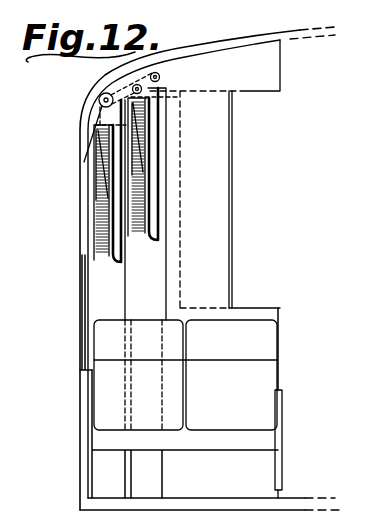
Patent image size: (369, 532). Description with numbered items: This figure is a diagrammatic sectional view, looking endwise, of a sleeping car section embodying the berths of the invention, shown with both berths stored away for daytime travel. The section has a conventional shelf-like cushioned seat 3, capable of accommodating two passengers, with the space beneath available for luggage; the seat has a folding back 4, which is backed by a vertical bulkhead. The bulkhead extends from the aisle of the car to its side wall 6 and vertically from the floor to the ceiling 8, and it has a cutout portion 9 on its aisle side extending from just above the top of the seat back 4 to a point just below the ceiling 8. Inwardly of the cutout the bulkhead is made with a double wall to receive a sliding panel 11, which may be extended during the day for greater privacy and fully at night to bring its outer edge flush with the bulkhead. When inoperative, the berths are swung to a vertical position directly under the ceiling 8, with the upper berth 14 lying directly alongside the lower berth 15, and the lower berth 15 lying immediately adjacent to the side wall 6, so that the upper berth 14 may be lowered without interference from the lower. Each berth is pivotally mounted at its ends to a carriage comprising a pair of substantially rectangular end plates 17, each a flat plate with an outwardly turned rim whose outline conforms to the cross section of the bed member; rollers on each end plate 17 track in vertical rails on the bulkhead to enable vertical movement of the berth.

The cushioned seat 3 is at (257, 429).
The folding back 4 is at (265, 351).
The side wall 6 is at (100, 295).
The ceiling 8 is at (257, 46).
The cutout portion 9 is at (249, 270).
The sliding panel 11 is at (234, 200).
The upper berth 14 is at (164, 211).
The lower berth 15 is at (111, 265).
The end plate 17 is at (137, 207).